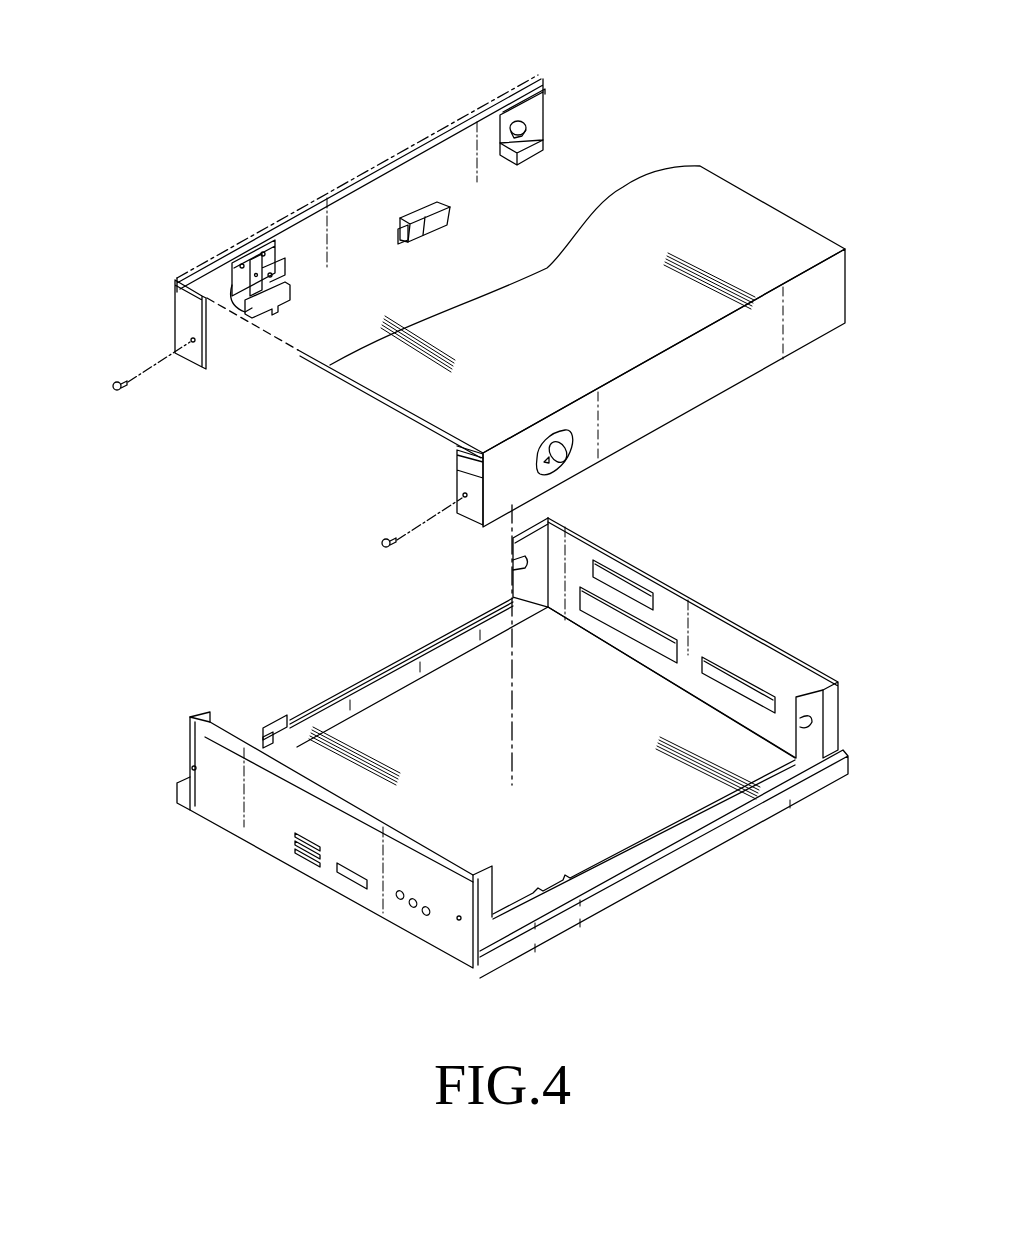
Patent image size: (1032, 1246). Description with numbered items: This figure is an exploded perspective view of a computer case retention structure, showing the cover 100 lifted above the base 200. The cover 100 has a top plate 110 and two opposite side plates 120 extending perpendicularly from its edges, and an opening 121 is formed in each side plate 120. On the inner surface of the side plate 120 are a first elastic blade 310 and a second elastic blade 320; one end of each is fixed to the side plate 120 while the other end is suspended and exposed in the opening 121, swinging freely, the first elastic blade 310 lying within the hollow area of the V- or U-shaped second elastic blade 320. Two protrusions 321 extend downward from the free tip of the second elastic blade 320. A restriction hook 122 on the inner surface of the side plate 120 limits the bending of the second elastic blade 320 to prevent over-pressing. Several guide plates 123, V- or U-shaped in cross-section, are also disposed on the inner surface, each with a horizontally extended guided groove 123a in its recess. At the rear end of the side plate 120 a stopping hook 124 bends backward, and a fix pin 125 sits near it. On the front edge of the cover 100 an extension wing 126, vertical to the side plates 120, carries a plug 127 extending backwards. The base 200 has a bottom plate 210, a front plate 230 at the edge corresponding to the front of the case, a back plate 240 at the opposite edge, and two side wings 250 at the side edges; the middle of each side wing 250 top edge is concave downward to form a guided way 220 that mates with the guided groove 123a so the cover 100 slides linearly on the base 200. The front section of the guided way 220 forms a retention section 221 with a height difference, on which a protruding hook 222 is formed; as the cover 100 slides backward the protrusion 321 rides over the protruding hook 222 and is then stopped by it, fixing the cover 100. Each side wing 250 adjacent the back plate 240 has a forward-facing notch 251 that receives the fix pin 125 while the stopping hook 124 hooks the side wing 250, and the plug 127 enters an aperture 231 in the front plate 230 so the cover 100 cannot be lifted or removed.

The cover 100 is at (756, 186).
The top plate 110 is at (777, 240).
The side plate 120 is at (830, 292).
The opening 121 is at (570, 448).
The restriction hook 122 is at (283, 277).
The guide plate 123 is at (430, 205).
The guided groove 123a is at (405, 236).
The stopping hook 124 is at (527, 153).
The fix pin 125 is at (514, 121).
The extension wing 126 is at (183, 329).
The plug 127 is at (112, 388).
The base 200 is at (609, 910).
The bottom plate 210 is at (633, 798).
The guided way 220 is at (303, 700).
The retention section 221 is at (273, 713).
The protruding hook 222 is at (260, 733).
The front plate 230 is at (230, 804).
The aperture 231 is at (190, 767).
The back plate 240 is at (695, 623).
The side wing 250 is at (543, 538).
The notch 251 is at (512, 565).
The first elastic blade 310 is at (257, 240).
The second elastic blade 320 is at (282, 266).
The protrusion 321 is at (277, 313).